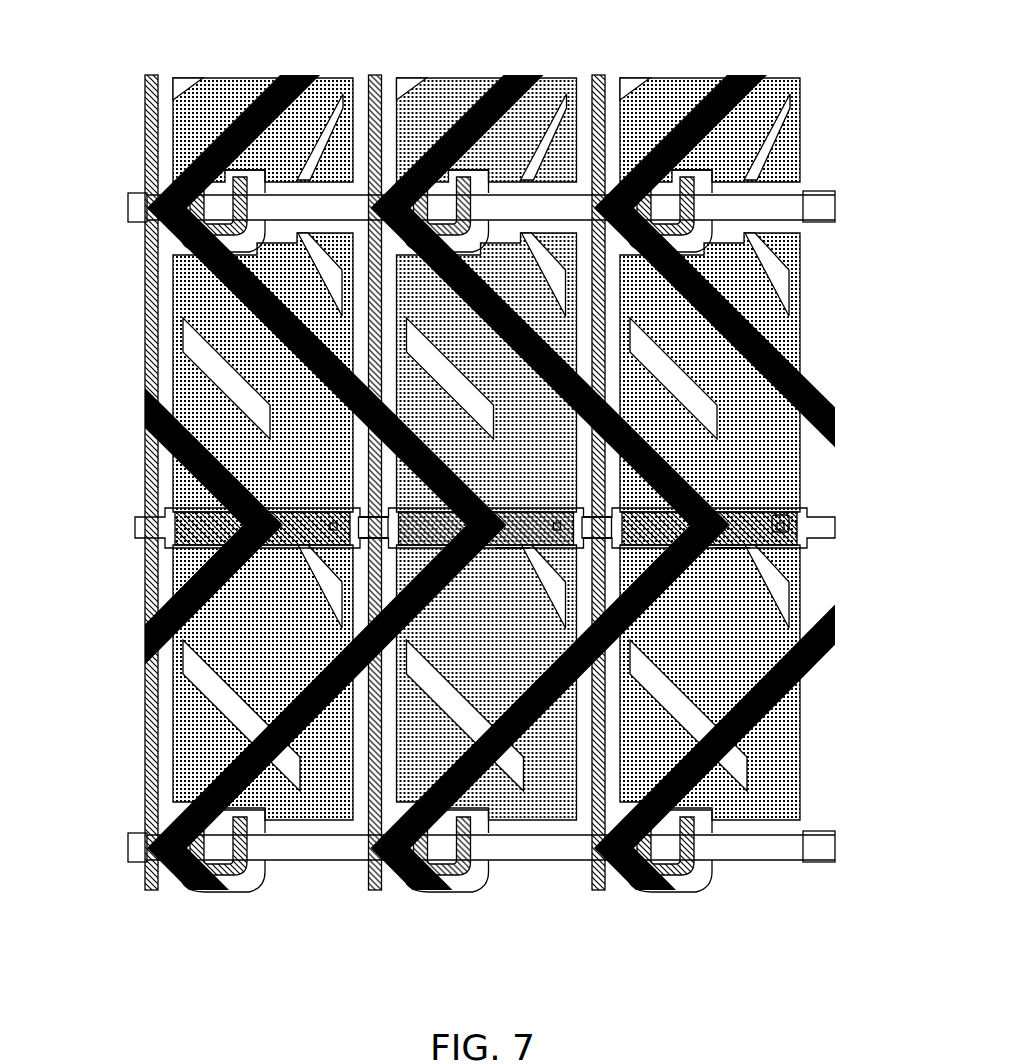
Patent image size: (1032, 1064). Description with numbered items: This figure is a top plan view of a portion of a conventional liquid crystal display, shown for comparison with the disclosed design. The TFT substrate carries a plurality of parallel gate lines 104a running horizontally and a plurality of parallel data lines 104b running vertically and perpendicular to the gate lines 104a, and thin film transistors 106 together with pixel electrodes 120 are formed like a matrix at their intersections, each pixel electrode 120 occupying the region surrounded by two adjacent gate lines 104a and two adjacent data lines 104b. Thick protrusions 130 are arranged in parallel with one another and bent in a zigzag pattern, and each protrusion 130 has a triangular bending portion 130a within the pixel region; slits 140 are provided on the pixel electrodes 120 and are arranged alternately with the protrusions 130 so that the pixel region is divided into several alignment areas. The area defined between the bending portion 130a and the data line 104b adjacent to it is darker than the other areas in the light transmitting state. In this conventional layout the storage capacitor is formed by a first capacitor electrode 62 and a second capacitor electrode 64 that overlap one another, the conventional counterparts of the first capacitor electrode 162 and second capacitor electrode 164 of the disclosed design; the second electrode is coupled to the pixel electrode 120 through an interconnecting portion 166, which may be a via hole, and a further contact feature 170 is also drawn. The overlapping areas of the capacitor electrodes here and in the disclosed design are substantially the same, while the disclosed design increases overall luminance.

The gate line 104a is at (128, 207).
The data line 104b is at (147, 98).
The thin film transistor 106 is at (283, 190).
The pixel electrode 120 is at (173, 278).
The protrusion 130 is at (550, 483).
The bending portion 130a is at (131, 483).
The slit 140 is at (215, 372).
The first capacitor electrode 162 is at (180, 548).
The second capacitor electrode 164 is at (185, 560).
The interconnecting portion 166 is at (790, 504).
The contact hole 170 is at (783, 504).
The first capacitor electrode 62 is at (368, 548).
The second capacitor electrode 64 is at (512, 548).